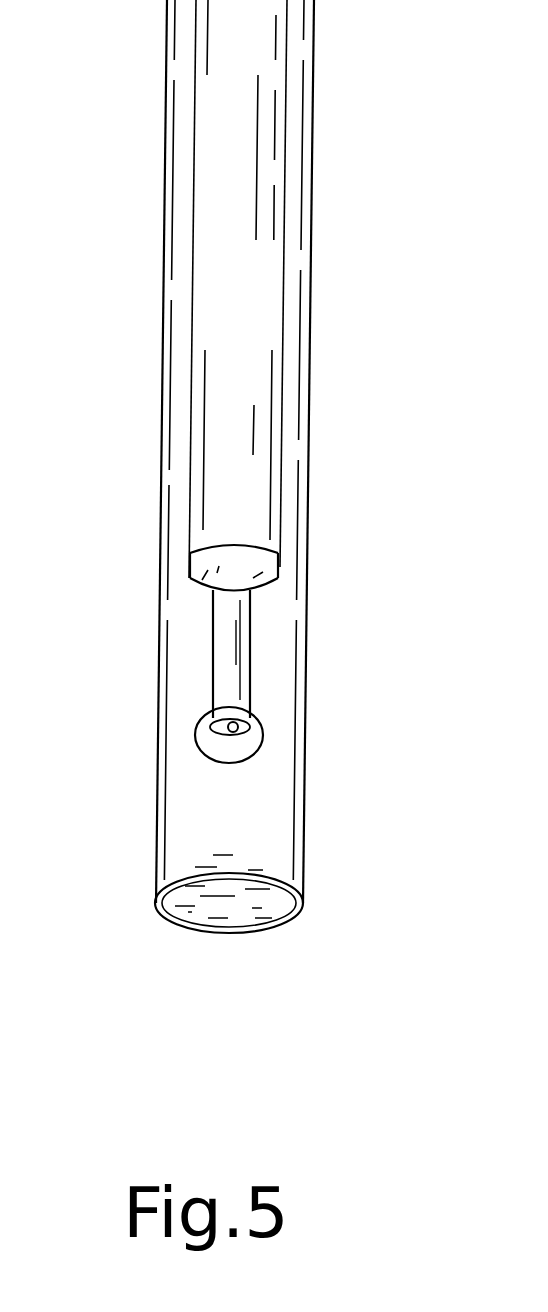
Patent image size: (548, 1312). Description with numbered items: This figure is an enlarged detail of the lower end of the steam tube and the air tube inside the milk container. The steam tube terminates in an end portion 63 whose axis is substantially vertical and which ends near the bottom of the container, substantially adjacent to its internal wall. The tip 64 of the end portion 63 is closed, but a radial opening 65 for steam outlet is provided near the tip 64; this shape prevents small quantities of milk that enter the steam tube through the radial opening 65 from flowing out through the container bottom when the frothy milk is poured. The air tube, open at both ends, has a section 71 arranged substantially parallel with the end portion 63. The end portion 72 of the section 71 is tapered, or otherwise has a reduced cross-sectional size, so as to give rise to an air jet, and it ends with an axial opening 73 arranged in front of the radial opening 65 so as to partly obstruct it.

The end portion 63 is at (295, 822).
The tip 64 is at (230, 907).
The radial opening 65 is at (238, 745).
The section 71 is at (250, 527).
The end portion 72 is at (232, 648).
The axial opening 73 is at (222, 737).